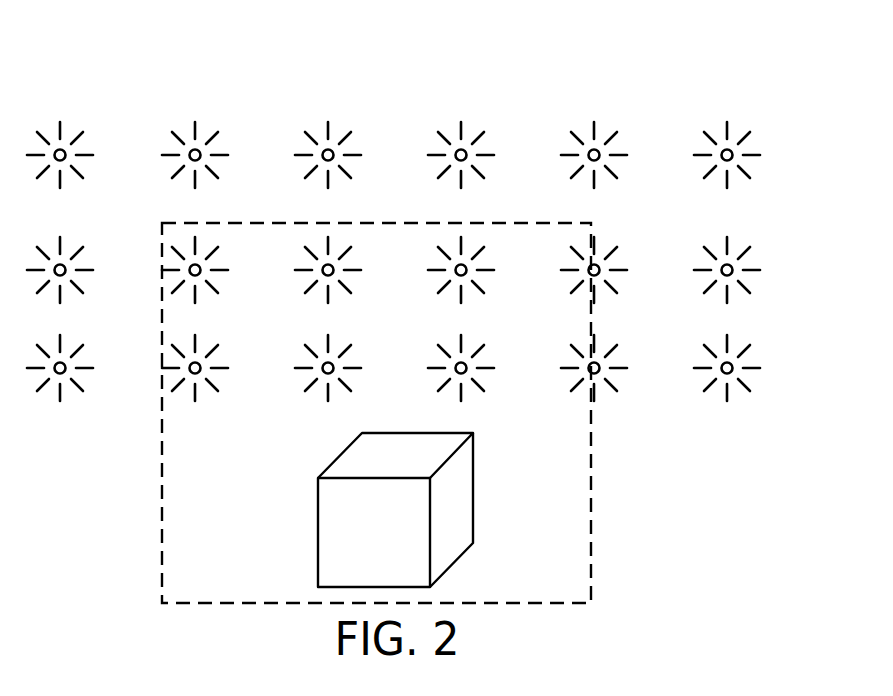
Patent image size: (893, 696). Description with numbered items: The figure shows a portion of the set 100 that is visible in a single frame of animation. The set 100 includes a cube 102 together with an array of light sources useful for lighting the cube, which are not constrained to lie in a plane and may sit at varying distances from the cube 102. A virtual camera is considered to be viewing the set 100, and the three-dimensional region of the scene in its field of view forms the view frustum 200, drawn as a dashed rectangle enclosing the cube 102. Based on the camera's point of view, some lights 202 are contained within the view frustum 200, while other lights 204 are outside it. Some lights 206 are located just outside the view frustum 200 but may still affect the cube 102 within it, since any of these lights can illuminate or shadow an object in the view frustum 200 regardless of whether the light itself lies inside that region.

The set 100 is at (406, 318).
The cube 102 is at (453, 517).
The view frustum 200 is at (592, 570).
The lights 202 is at (305, 405).
The lights 204 is at (225, 123).
The lights 206 is at (620, 282).